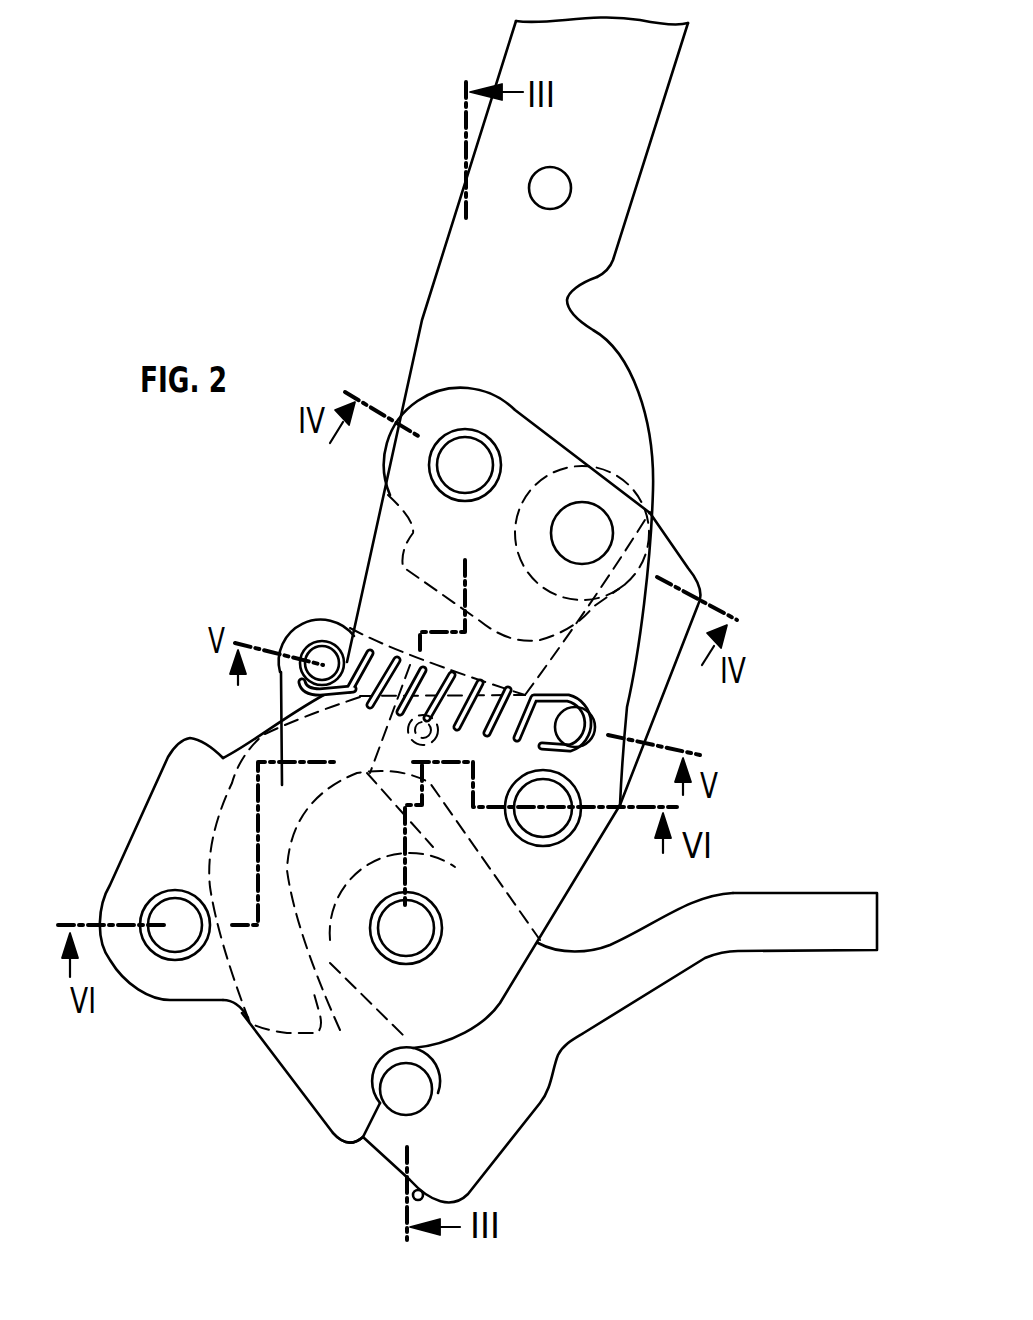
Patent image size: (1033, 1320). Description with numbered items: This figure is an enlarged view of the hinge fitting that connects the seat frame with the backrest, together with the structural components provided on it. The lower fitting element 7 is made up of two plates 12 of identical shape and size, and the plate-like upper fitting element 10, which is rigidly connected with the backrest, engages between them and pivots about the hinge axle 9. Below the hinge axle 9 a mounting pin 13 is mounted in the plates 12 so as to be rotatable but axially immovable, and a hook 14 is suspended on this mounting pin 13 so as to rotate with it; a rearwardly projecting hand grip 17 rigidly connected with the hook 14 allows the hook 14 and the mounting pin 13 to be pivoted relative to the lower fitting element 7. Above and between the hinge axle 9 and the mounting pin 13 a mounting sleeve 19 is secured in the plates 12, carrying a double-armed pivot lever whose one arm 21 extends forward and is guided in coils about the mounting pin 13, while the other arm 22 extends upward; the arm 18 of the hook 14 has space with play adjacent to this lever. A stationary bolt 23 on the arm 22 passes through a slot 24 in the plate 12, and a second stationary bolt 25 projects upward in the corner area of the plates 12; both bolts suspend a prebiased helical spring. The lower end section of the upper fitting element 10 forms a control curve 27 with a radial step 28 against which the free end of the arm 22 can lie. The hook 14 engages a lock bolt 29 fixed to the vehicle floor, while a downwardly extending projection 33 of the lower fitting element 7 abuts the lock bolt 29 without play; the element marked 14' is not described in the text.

The lower fitting element 7 is at (160, 785).
The hinge axle 9 is at (460, 483).
The upper fitting element 10 is at (653, 100).
The plates 12 is at (520, 420).
The mounting pin 13 is at (443, 945).
The hook 14 is at (548, 1047).
The lever stop 14' is at (441, 1170).
The hand grip 17 is at (677, 967).
The arm 18 is at (292, 693).
The mounting sleeve 19 is at (577, 823).
The arm 21 is at (240, 1037).
The arm 22 is at (663, 550).
The stationary bolt 23 is at (577, 717).
The slot 24 is at (530, 737).
The stationary bolt 25 is at (320, 640).
The control curve 27 is at (630, 362).
The radial step 28 is at (375, 528).
The lock bolt 29 is at (422, 1095).
The projection 33 is at (333, 1137).